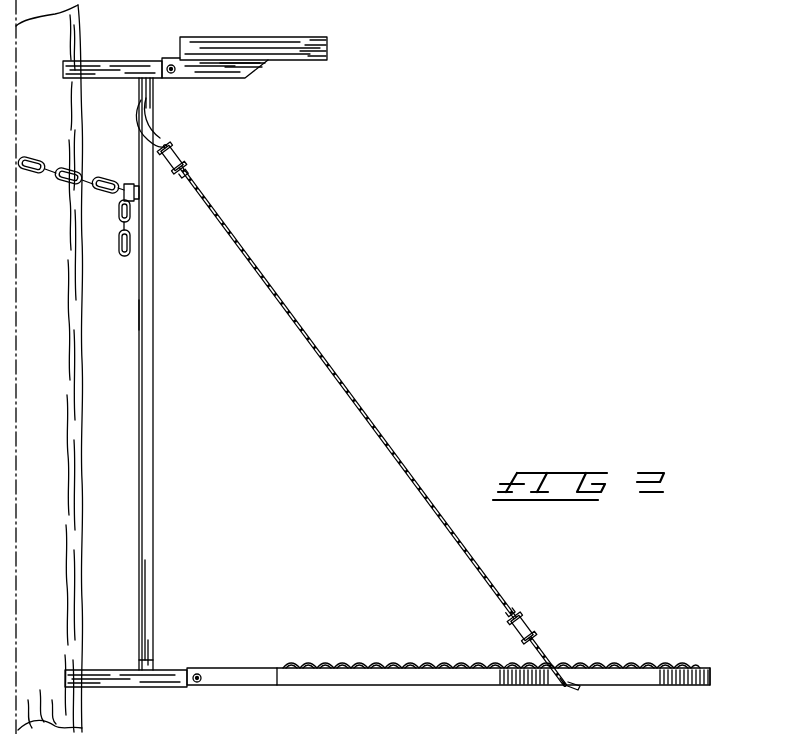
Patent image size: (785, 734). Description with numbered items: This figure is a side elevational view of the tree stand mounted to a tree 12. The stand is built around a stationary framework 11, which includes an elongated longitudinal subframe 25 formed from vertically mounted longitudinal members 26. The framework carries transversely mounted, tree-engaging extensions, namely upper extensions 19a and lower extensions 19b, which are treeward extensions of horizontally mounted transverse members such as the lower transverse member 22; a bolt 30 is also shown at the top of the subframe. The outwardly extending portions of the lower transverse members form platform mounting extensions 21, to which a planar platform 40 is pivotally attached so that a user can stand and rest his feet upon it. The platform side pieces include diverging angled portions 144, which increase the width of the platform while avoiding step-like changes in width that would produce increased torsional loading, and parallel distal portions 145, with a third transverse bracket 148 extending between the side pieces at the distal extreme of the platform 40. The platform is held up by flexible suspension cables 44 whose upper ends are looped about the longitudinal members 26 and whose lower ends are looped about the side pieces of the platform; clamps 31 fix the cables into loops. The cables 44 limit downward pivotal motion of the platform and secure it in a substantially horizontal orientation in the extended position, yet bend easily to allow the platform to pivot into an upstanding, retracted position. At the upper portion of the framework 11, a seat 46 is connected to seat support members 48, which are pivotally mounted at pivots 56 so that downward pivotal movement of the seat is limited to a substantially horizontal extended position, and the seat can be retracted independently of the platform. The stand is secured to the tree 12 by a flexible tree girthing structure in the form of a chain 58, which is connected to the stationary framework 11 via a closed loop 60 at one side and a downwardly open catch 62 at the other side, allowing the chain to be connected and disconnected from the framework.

The stationary framework 11 is at (155, 372).
The tree 12 is at (55, 555).
The upper extensions 19a is at (93, 63).
The lower extensions 19b is at (114, 682).
The platform mounting extensions 21 is at (172, 680).
The transverse member 22 is at (155, 668).
The longitudinal subframe 25 is at (155, 514).
The longitudinal members 26 is at (147, 428).
The bolt 30 is at (108, 82).
The clamps 31 is at (182, 163).
The platform 40 is at (515, 677).
The flexible suspension cables 44 is at (400, 458).
The seat 46 is at (327, 38).
The seat support members 48 is at (252, 64).
The pivots 56 is at (176, 72).
The chain 58 is at (68, 190).
The closed loop 60 is at (142, 204).
The catch 62 is at (134, 184).
The diverging angled portions 144 is at (416, 686).
The distal portions 145 is at (587, 683).
The third transverse bracket 148 is at (711, 674).